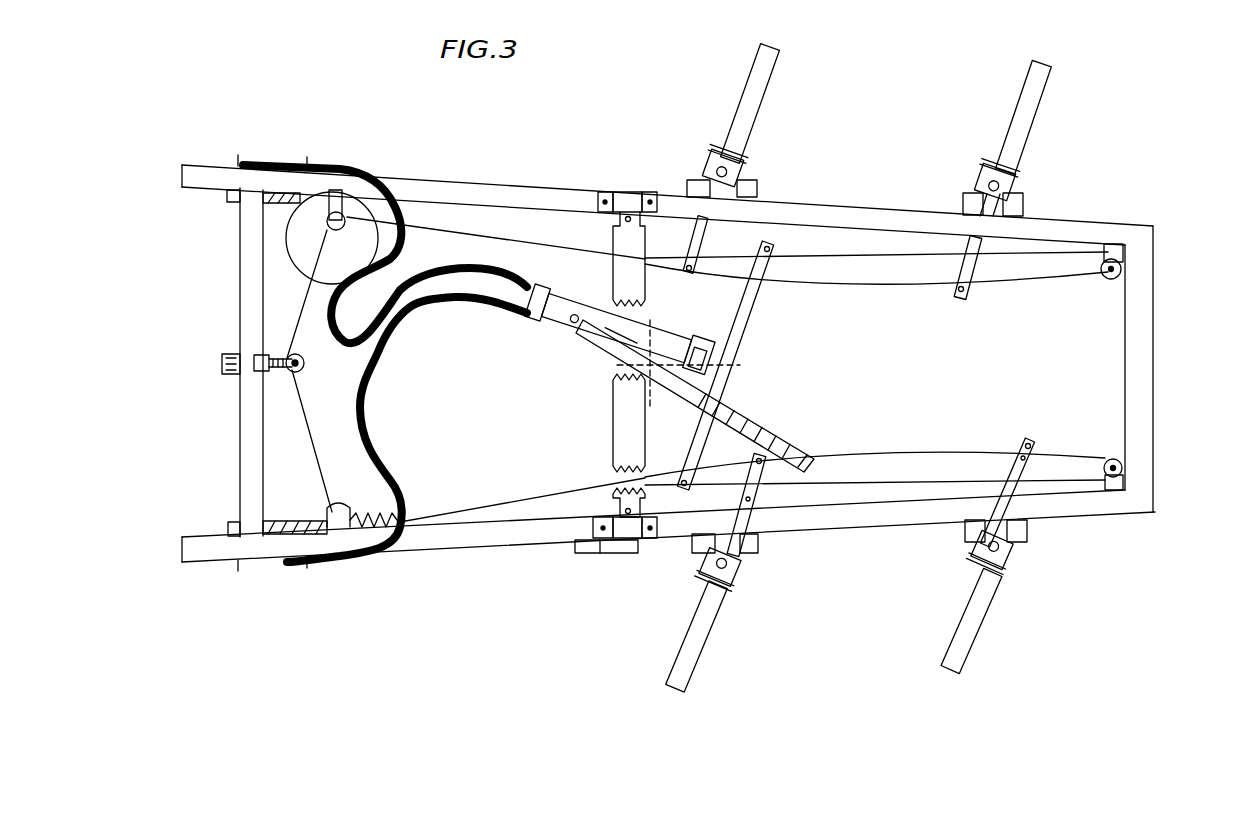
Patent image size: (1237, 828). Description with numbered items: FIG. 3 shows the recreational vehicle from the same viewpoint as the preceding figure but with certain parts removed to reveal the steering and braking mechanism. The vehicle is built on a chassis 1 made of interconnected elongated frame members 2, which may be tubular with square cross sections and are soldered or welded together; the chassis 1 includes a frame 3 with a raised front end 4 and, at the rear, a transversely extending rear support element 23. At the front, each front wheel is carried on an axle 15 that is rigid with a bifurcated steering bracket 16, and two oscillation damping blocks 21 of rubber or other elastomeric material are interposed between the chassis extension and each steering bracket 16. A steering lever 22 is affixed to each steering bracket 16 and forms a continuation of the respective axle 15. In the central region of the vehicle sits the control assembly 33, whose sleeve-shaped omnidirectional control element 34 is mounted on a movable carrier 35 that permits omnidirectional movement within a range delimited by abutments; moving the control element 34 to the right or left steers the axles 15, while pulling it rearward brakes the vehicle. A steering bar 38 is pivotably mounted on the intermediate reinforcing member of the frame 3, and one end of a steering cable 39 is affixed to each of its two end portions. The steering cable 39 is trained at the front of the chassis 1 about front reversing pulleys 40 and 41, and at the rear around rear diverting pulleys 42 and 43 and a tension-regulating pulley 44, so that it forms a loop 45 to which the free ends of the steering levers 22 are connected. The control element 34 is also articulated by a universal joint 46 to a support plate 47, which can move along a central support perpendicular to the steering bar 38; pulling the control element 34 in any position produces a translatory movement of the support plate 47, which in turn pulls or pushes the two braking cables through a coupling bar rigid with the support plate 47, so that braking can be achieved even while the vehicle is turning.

The chassis 1 is at (400, 152).
The frame member 2 is at (827, 213).
The frame 3 is at (537, 549).
The raised front end 4 is at (1172, 364).
The axle 15 is at (752, 88).
The bifurcated steering bracket 16 is at (708, 152).
The oscillation damping block 21 is at (688, 190).
The steering lever 22 is at (695, 248).
The rear support element 23 is at (243, 318).
The control assembly 33 is at (822, 414).
The omnidirectional control element 34 is at (753, 428).
The movable carrier 35 is at (587, 353).
The steering bar 38 is at (750, 297).
The steering cable 39 is at (898, 285).
The front reversing pulley 40 is at (1123, 480).
The front reversing pulley 41 is at (1123, 267).
The rear diverting pulley 42 is at (350, 507).
The rear diverting pulley 43 is at (290, 228).
The tension-regulating pulley 44 is at (288, 373).
The loop 45 is at (1058, 380).
The universal joint 46 is at (581, 300).
The support plate 47 is at (577, 305).